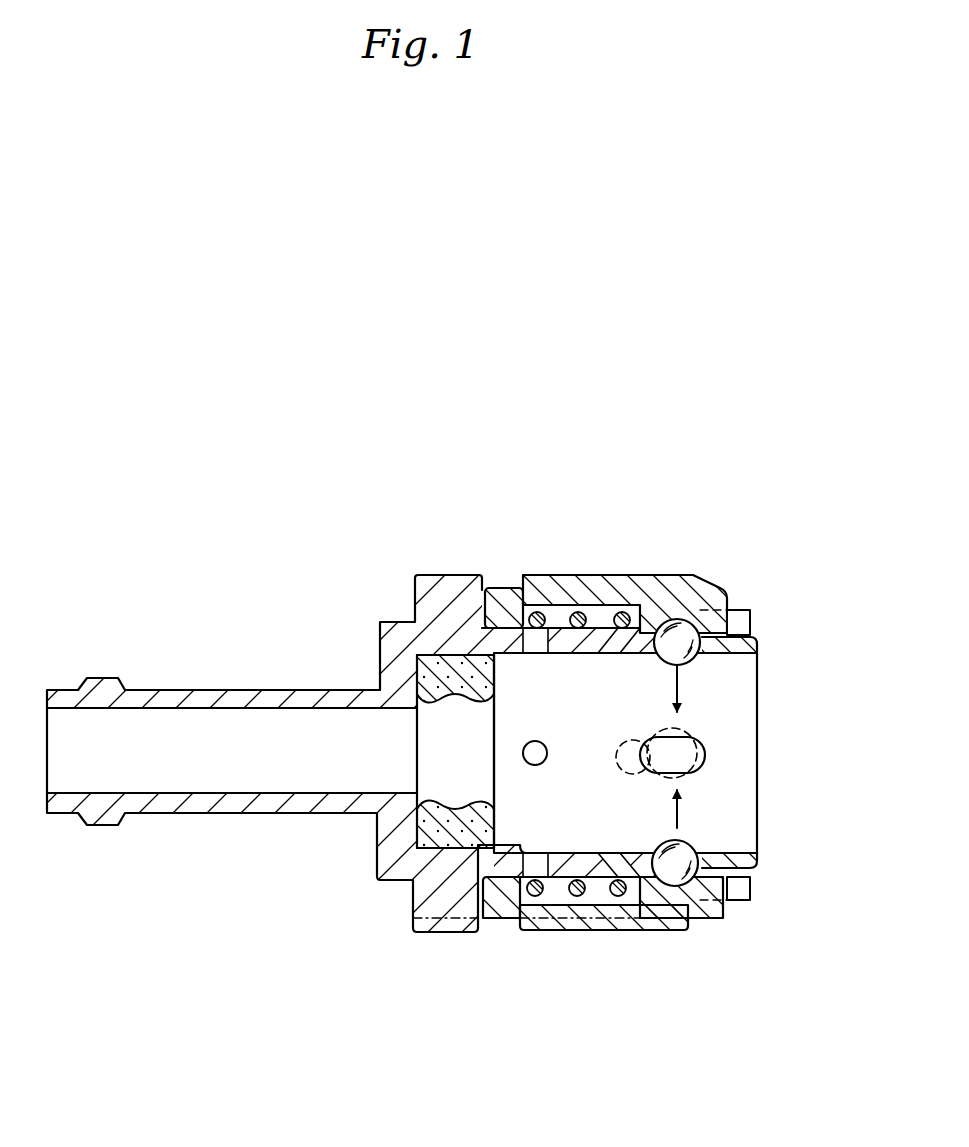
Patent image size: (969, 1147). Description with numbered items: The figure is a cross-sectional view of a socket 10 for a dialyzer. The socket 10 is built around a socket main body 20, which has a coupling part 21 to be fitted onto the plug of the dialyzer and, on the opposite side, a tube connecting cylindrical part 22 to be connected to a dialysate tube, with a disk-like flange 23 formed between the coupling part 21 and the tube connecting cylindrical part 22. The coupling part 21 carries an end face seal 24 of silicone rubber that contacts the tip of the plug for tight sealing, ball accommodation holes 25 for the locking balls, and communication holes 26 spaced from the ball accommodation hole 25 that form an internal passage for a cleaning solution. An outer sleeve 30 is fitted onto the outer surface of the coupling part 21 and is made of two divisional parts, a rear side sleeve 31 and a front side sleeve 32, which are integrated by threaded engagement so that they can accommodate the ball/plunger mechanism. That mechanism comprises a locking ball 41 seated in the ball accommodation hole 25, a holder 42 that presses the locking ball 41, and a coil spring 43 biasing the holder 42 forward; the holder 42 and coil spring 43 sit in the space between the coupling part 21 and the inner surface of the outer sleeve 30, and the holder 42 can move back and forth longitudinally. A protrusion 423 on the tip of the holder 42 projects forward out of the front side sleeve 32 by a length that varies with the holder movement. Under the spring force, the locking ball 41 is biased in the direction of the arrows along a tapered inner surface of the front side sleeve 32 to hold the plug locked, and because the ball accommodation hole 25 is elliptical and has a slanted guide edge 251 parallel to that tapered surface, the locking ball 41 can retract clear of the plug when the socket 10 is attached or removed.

The socket 10 is at (350, 934).
The socket main body 20 is at (376, 626).
The coupling part 21 is at (741, 757).
The tube connecting cylindrical part 22 is at (162, 690).
The flange 23 is at (445, 932).
The end face seal 24 is at (455, 814).
The ball accommodation hole 25 is at (643, 853).
The slanted guide edge 251 is at (640, 855).
The communication hole 26 is at (535, 741).
The outer sleeve 30 is at (662, 487).
The rear side sleeve 31 is at (516, 576).
The front side sleeve 32 is at (645, 576).
The locking ball 41 is at (693, 843).
The holder 42 is at (657, 930).
The protrusion 423 is at (751, 888).
The coil spring 43 is at (610, 930).